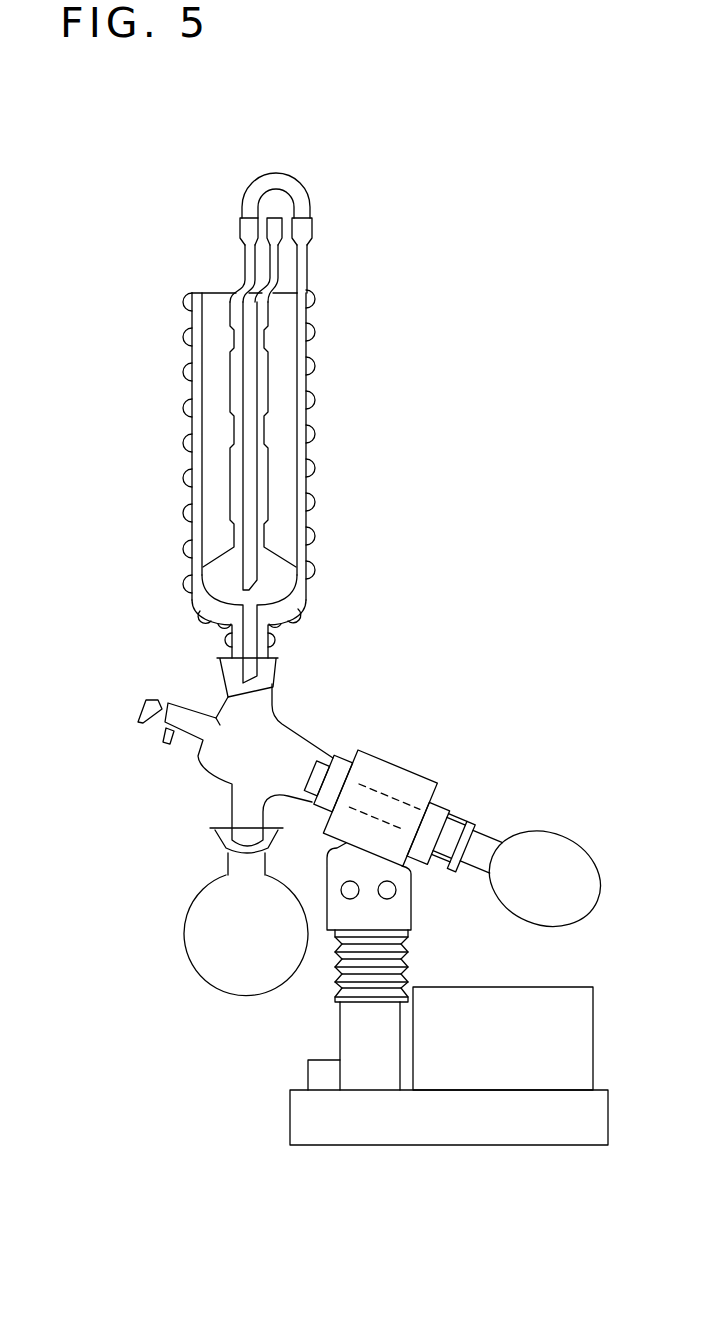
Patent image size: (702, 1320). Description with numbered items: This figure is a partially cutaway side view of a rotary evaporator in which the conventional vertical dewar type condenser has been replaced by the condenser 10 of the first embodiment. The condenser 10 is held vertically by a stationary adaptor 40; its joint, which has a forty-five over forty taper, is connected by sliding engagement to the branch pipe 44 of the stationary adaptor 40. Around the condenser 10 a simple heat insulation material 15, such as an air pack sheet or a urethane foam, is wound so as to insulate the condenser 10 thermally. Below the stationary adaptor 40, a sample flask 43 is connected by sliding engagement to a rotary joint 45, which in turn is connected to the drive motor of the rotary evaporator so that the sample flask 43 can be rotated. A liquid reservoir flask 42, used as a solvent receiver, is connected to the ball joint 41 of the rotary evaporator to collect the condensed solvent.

The condenser 10 is at (191, 393).
The heat insulation material 15 is at (316, 333).
The stationary adaptor 40 is at (308, 732).
The ball joint 41 is at (237, 835).
The liquid reservoir flask 42 is at (202, 953).
The sample flask 43 is at (540, 847).
The branch pipe 44 is at (221, 695).
The rotary joint 45 is at (391, 801).